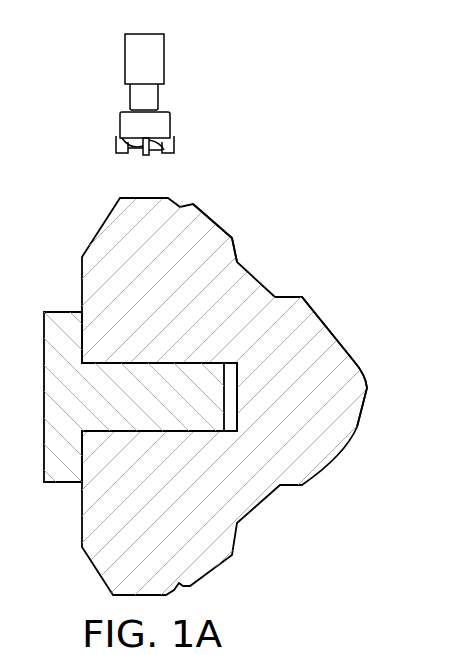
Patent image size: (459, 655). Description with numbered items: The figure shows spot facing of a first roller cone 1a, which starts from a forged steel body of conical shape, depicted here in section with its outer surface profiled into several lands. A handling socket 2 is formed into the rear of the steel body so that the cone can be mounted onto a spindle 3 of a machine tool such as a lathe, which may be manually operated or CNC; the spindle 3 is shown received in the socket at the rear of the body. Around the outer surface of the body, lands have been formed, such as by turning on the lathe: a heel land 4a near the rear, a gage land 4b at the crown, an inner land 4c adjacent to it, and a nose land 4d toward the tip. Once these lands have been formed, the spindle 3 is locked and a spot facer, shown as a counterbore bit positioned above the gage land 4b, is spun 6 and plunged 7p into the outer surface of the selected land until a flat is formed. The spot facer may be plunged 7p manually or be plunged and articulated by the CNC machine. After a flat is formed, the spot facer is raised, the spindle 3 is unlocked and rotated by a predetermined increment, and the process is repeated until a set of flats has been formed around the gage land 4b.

The first roller cone 1a is at (55, 178).
The handling socket 2 is at (237, 395).
The spindle 3 is at (44, 328).
The heel land 4a is at (100, 228).
The gage land 4b is at (155, 190).
The inner land 4c is at (218, 229).
The nose land 4d is at (332, 326).
The spinning of the spot facer 6 is at (106, 29).
The plunging of the spot facer 7p is at (205, 168).